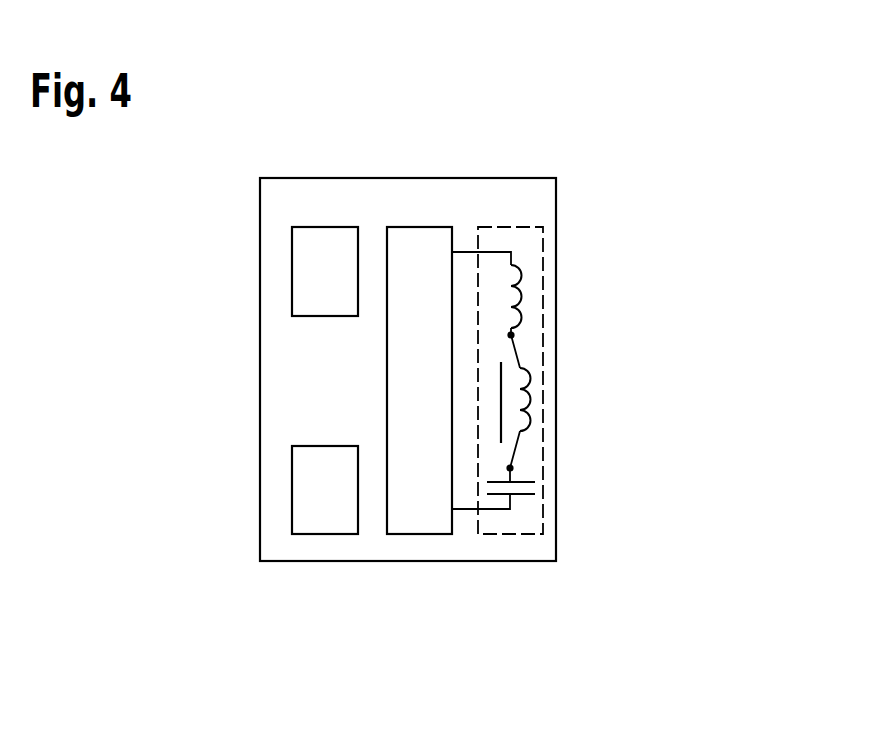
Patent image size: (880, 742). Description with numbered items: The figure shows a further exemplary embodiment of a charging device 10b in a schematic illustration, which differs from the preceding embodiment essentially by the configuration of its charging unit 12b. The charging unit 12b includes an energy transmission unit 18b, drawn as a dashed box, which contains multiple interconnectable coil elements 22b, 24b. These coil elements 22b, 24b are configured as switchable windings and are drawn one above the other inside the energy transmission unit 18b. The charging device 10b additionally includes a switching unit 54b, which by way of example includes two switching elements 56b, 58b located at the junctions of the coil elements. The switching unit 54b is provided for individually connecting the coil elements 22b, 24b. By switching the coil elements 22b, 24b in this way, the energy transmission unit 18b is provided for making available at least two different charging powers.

The charging device 10b is at (254, 612).
The charging unit 12b is at (330, 580).
The energy transmission unit 18b is at (502, 227).
The coil element 22b is at (540, 288).
The coil element 24b is at (544, 390).
The switching unit 54b is at (622, 337).
The switching element 56b is at (515, 348).
The switching element 58b is at (515, 450).